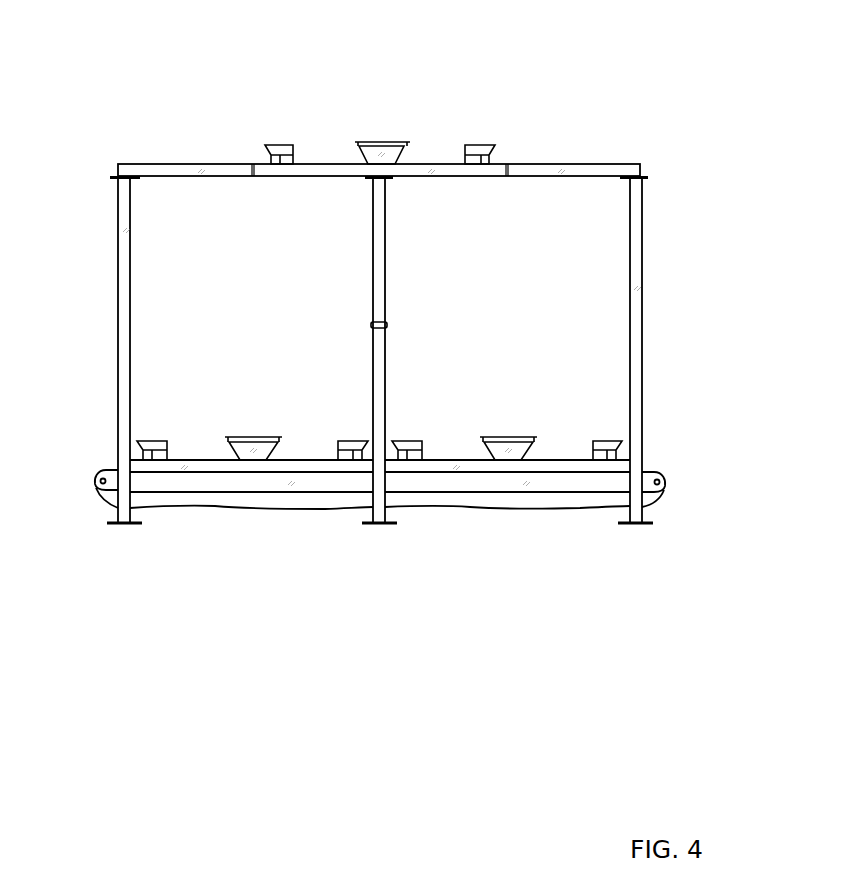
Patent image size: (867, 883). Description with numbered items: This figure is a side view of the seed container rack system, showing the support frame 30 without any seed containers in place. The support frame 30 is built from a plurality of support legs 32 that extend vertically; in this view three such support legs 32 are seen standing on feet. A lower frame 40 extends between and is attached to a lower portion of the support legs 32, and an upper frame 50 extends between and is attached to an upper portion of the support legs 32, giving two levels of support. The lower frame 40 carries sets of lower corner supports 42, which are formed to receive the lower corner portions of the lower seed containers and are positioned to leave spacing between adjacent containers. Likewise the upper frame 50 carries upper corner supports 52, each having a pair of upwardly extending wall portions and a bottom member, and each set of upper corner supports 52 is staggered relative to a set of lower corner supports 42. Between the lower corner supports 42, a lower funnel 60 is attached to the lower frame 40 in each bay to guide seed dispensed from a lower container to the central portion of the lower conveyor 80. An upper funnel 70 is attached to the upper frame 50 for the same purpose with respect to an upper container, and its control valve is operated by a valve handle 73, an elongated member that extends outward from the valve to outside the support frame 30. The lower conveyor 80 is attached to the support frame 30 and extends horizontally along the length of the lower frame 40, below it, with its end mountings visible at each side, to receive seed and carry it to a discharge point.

The support frame 30 is at (116, 325).
The support legs 32 is at (130, 250).
The lower frame 40 is at (293, 452).
The lower corner supports 42 is at (157, 440).
The upper frame 50 is at (190, 158).
The upper corner supports 52 is at (282, 145).
The lower funnel 60 is at (228, 438).
The upper funnel 70 is at (357, 142).
The valve handle 73 is at (372, 325).
The lower conveyor 80 is at (667, 488).